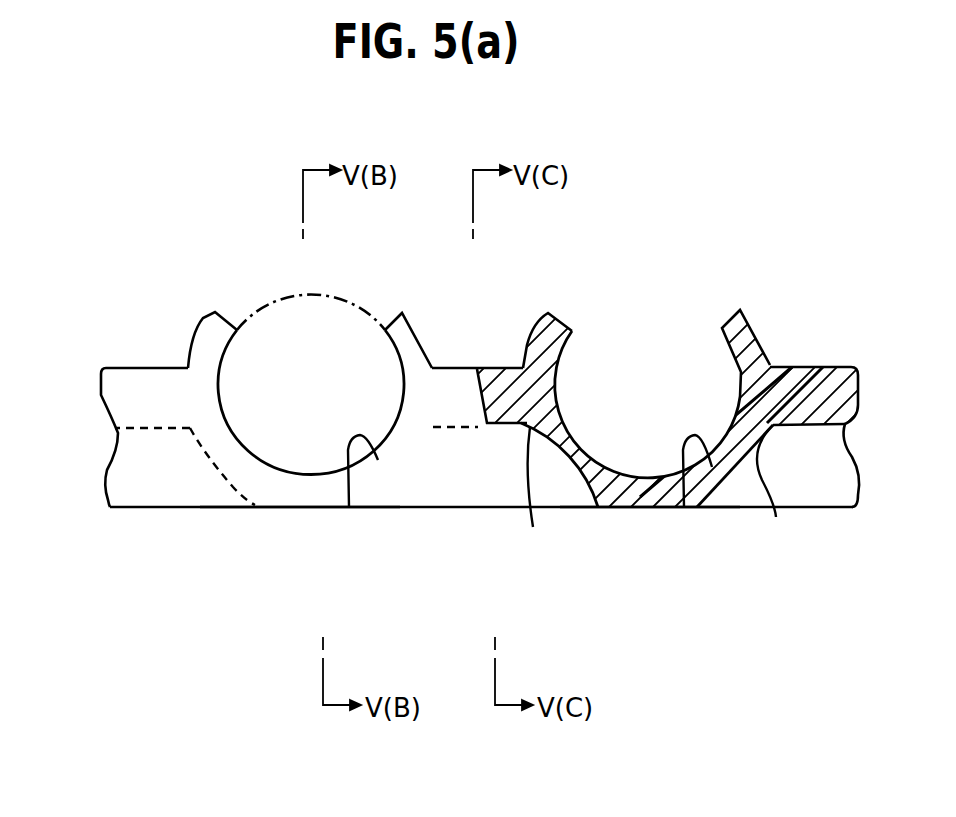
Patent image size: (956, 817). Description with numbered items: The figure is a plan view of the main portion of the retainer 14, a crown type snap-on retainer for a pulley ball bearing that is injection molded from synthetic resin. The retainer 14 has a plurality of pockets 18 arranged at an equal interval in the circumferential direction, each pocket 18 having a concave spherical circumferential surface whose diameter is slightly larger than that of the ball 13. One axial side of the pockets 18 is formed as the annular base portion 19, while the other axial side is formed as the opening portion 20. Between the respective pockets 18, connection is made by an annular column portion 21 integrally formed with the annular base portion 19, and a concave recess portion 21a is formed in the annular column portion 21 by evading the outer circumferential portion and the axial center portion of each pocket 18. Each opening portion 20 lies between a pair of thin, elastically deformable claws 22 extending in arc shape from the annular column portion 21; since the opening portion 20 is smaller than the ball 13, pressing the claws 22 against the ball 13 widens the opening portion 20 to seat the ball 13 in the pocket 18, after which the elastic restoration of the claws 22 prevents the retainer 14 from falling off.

The retainer 14 is at (617, 187).
The opening portion 20 is at (295, 285).
The ball 13 is at (350, 296).
The claw 22 is at (203, 315).
The pocket 18 is at (349, 507).
The annular base portion 19 is at (298, 495).
The annular column portion 21 is at (168, 415).
The concave recess portion 21a is at (147, 430).